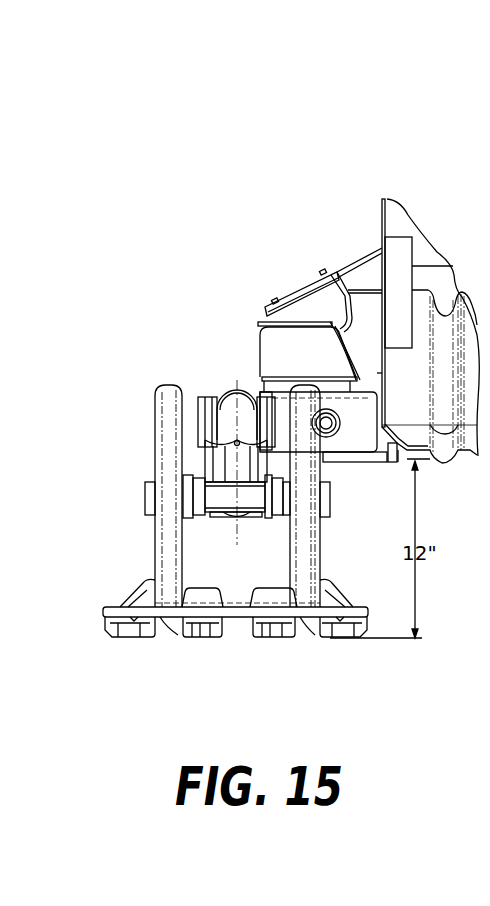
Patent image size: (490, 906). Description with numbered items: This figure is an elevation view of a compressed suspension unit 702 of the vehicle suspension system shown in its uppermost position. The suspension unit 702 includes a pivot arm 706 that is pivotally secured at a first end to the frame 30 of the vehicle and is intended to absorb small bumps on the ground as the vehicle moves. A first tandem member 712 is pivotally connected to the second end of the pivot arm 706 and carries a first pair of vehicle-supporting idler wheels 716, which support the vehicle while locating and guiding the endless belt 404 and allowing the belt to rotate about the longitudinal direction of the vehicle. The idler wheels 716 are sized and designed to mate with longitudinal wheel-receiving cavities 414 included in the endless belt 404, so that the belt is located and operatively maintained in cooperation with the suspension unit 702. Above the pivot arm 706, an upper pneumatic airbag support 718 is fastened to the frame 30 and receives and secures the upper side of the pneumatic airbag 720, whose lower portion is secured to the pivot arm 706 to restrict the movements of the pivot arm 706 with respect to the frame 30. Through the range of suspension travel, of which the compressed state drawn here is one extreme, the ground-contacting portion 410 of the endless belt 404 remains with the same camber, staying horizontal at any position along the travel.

The suspension unit 702 is at (224, 226).
The frame 30 is at (397, 217).
The upper pneumatic airbag support 718 is at (316, 296).
The pneumatic airbag 720 is at (319, 364).
The first tandem member 712 is at (223, 394).
The pivot arm 706 is at (355, 437).
The vehicle-supporting idler wheels 716 is at (331, 546).
The endless belt 404 is at (163, 632).
The longitudinal wheel-receiving cavities 414 is at (170, 608).
The ground-contacting portion 410 is at (273, 653).